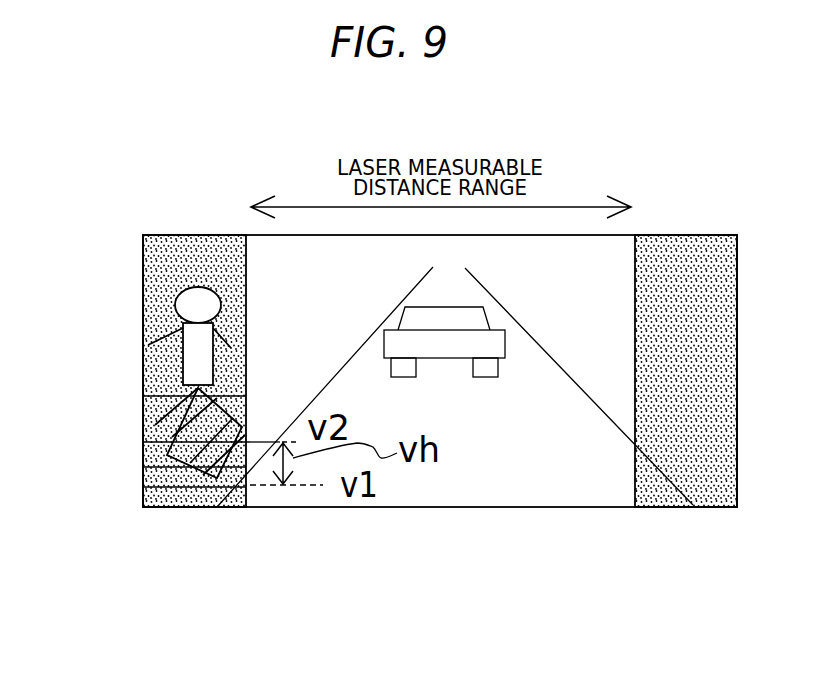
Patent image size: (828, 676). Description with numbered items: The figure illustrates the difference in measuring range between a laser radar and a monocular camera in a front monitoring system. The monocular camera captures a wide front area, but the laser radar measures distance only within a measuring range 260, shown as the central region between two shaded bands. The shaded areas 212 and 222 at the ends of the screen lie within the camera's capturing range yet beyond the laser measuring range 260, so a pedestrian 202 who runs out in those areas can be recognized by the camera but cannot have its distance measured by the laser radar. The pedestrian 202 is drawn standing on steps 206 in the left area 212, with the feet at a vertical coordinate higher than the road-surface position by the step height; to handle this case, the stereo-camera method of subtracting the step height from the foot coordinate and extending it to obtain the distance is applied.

The pedestrian 202 is at (148, 345).
The steps 206 is at (167, 458).
The area at the end of the screen 212 is at (162, 507).
The area at the end of the screen 222 is at (717, 508).
The measuring range of the laser radar 260 is at (422, 507).